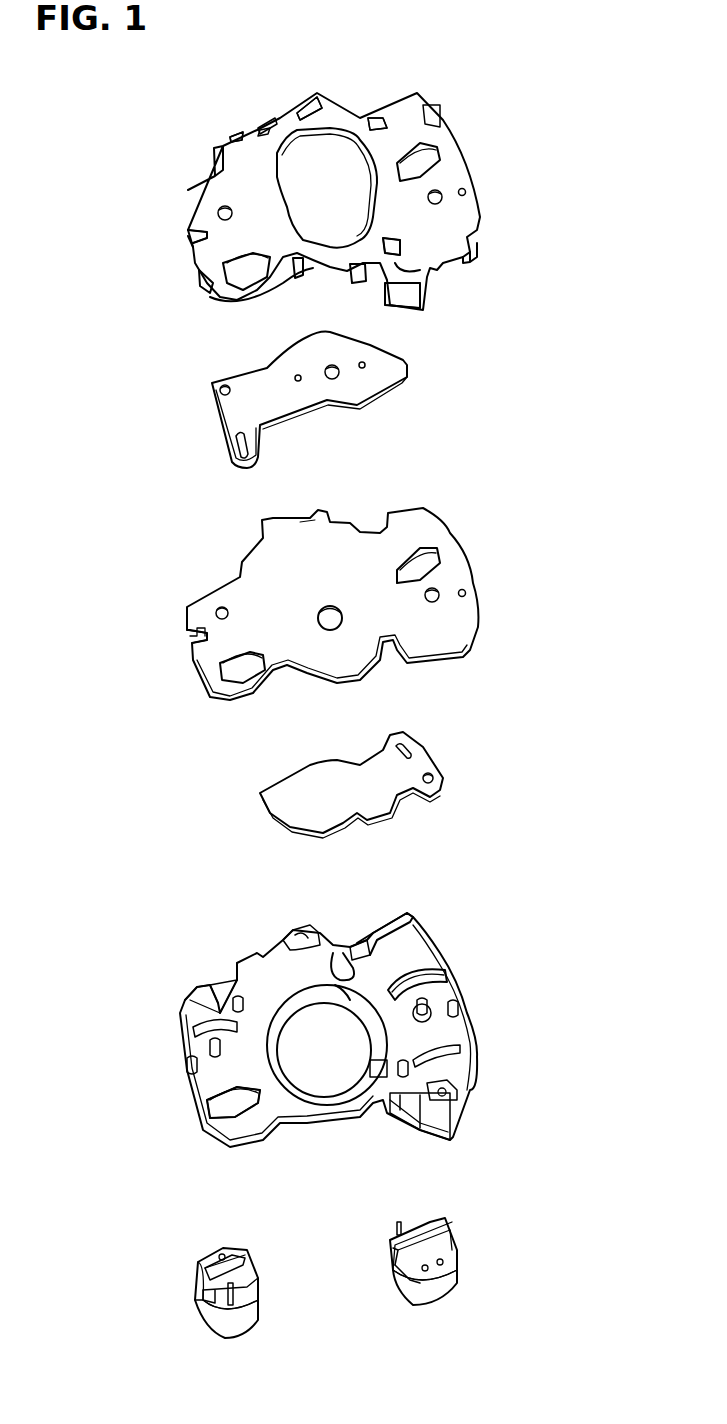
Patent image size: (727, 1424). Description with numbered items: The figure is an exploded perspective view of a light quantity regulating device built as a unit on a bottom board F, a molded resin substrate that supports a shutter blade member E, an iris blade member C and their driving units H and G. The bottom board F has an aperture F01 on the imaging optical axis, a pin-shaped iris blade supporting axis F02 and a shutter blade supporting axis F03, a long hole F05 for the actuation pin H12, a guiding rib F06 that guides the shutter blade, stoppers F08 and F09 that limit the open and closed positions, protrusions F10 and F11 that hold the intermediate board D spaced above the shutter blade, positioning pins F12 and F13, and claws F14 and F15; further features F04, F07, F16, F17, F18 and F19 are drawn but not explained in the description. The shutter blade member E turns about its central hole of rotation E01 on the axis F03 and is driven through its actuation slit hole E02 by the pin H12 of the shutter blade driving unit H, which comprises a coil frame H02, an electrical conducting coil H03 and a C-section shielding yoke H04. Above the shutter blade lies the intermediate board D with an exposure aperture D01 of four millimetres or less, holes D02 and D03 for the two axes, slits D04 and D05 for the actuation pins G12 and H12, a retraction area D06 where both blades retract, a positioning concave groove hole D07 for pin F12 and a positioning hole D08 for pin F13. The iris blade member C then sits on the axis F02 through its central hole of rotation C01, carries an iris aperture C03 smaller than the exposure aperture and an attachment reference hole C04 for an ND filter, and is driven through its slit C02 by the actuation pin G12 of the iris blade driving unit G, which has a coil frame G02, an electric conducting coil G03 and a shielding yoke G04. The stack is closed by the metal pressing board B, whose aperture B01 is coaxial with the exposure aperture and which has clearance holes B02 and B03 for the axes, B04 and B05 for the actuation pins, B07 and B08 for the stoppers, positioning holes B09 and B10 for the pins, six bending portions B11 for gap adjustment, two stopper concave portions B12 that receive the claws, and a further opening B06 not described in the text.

The pressing board B is at (202, 177).
The aperture B01 is at (323, 147).
The clearance hole B02 is at (218, 213).
The clearance hole B03 is at (440, 200).
The clearance hole B04 is at (237, 277).
The clearance hole B05 is at (430, 160).
The slot B06 is at (310, 97).
The clearance hole B07 is at (377, 117).
The clearance hole B08 is at (430, 263).
The positioning hole B09 is at (195, 243).
The positioning hole B10 is at (465, 191).
The bending portion B11 is at (267, 117).
The stopper concave portion B12 is at (223, 137).
The iris blade member C is at (209, 383).
The central hole of rotation C01 is at (225, 386).
The slit C02 is at (240, 447).
The iris aperture C03 is at (325, 366).
The attachment reference hole C04 is at (298, 382).
The intermediate board D is at (228, 578).
The exposure aperture D01 is at (327, 620).
The hole D02 is at (220, 613).
The hole D03 is at (438, 593).
The slit D04 is at (237, 670).
The slit D05 is at (423, 557).
The retraction area D06 is at (305, 540).
The positioning concave groove hole D07 is at (195, 640).
The positioning hole D08 is at (465, 593).
The shutter blade member E is at (252, 790).
The central hole of rotation E01 is at (440, 773).
The actuation slit hole E02 is at (403, 750).
The bottom board F is at (310, 1137).
The aperture F01 is at (300, 1027).
The iris blade supporting axis F02 is at (210, 1050).
The shutter blade supporting axis F03 is at (430, 1013).
The arc groove F04 is at (227, 1123).
The long hole F05 is at (420, 967).
The guiding rib F06 is at (333, 947).
The boss F07 is at (302, 937).
The stopper F08 is at (383, 933).
The stopper F09 is at (373, 1063).
The protrusion F10 is at (240, 997).
The protrusion F11 is at (397, 1077).
The pin F12 is at (187, 1063).
The pin F13 is at (460, 1007).
The claw F14 is at (220, 987).
The claw F15 is at (403, 1123).
The arc rib F16 is at (197, 1027).
The arc rib F17 is at (440, 977).
The hook F18 is at (197, 1003).
The bracket F19 is at (457, 1103).
The iris blade driving unit G is at (195, 1258).
The coil frame G02 is at (198, 1285).
The electric conducting coil G03 is at (240, 1252).
The shielding yoke G04 is at (247, 1325).
The actuation pin G12 is at (240, 1295).
The shutter blade driving unit H is at (457, 1233).
The coil frame H02 is at (390, 1252).
The electrical conducting coil H03 is at (397, 1283).
The shielding yoke H04 is at (415, 1297).
The actuation pin H12 is at (398, 1223).